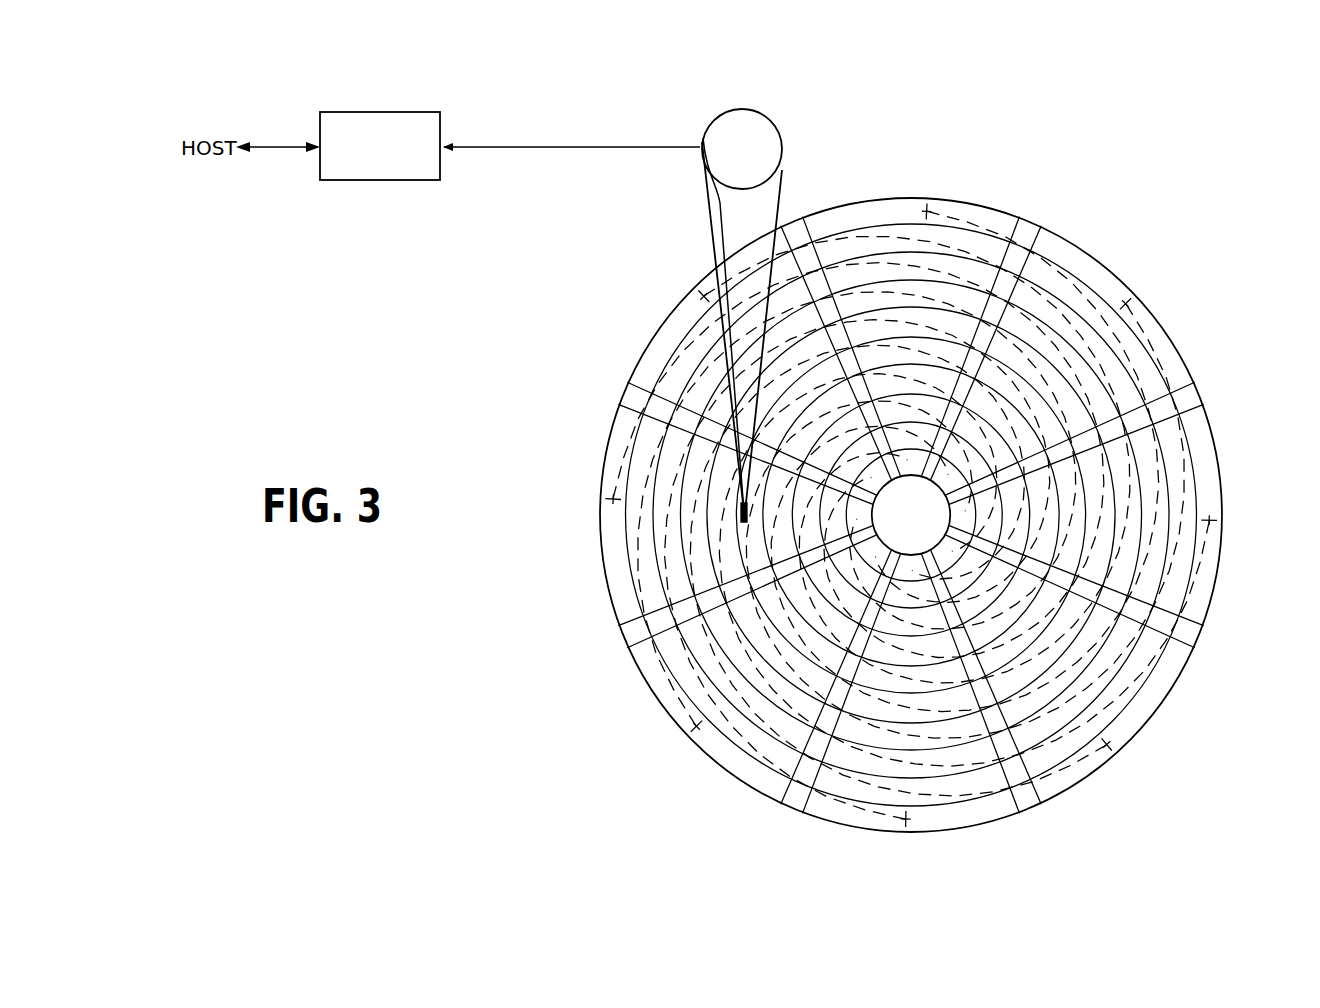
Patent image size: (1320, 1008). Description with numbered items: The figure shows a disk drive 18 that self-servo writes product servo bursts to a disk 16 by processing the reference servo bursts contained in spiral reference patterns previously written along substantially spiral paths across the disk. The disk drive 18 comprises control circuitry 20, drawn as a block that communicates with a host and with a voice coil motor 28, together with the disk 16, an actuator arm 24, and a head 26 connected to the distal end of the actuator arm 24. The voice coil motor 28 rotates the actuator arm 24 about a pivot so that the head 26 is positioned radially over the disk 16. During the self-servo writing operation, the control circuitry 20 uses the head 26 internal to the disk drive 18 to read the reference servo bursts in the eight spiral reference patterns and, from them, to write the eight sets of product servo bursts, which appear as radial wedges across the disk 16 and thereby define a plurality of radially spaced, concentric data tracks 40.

The disk 16 is at (1078, 233).
The disk drive 18 is at (145, 110).
The control circuitry 20 is at (383, 112).
The actuator arm 24 is at (710, 225).
The head 26 is at (744, 531).
The voice coil motor 28 is at (748, 108).
The data tracks 40 is at (964, 246).